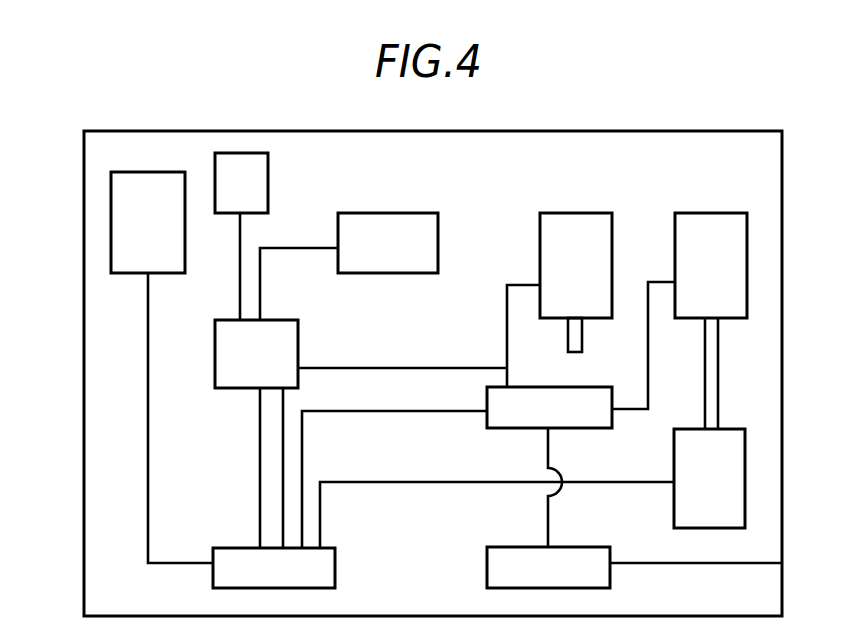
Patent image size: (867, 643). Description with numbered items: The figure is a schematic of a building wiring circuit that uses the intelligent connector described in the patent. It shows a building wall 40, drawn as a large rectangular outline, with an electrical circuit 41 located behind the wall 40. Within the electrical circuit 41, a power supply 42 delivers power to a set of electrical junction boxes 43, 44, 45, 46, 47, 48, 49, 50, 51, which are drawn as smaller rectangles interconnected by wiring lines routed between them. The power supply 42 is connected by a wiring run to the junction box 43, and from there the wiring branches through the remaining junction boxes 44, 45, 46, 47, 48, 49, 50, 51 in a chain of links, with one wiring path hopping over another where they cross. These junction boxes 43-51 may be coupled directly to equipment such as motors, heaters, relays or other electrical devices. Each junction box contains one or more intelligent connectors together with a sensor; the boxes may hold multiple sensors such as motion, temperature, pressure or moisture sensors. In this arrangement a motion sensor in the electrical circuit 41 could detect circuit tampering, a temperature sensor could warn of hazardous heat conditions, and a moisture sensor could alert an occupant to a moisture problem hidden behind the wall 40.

The building wall 40 is at (548, 130).
The electrical circuit 41 is at (338, 168).
The power supply 42 is at (123, 243).
The electrical junction box 43 is at (235, 555).
The electrical junction box 44 is at (232, 373).
The electrical junction box 45 is at (257, 180).
The electrical junction box 46 is at (407, 220).
The electrical junction box 47 is at (522, 420).
The electrical junction box 48 is at (508, 553).
The electrical junction box 49 is at (685, 505).
The electrical junction box 50 is at (580, 220).
The electrical junction box 51 is at (710, 220).